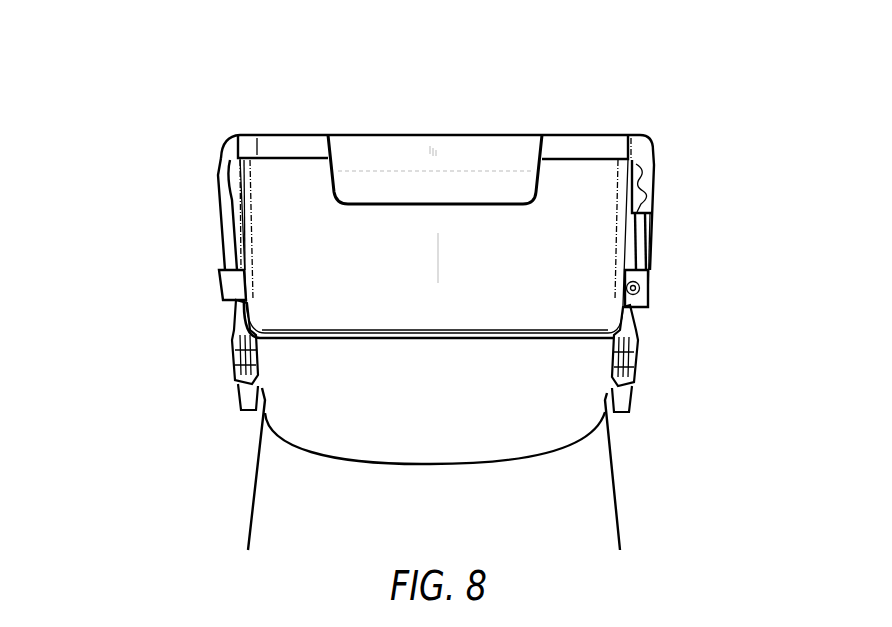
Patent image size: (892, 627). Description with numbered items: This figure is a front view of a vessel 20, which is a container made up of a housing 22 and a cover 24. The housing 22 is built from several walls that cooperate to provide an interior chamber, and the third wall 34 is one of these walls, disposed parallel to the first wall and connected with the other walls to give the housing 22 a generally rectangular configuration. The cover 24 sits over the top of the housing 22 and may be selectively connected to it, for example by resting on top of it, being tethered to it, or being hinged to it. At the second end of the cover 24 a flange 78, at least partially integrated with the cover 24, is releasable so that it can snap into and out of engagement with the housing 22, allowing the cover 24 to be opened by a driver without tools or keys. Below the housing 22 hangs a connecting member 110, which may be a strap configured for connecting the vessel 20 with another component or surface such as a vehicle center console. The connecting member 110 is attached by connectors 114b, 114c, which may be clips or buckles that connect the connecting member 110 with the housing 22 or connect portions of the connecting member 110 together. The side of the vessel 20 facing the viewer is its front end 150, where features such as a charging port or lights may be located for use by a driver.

The vessel 20 is at (708, 98).
The housing 22 is at (305, 355).
The cover 24 is at (594, 143).
The third wall 34 is at (607, 242).
The flange 78 is at (465, 148).
The connecting member 110 is at (539, 470).
The connector 114b is at (218, 350).
The connector 114c is at (650, 350).
The front end 150 is at (543, 347).